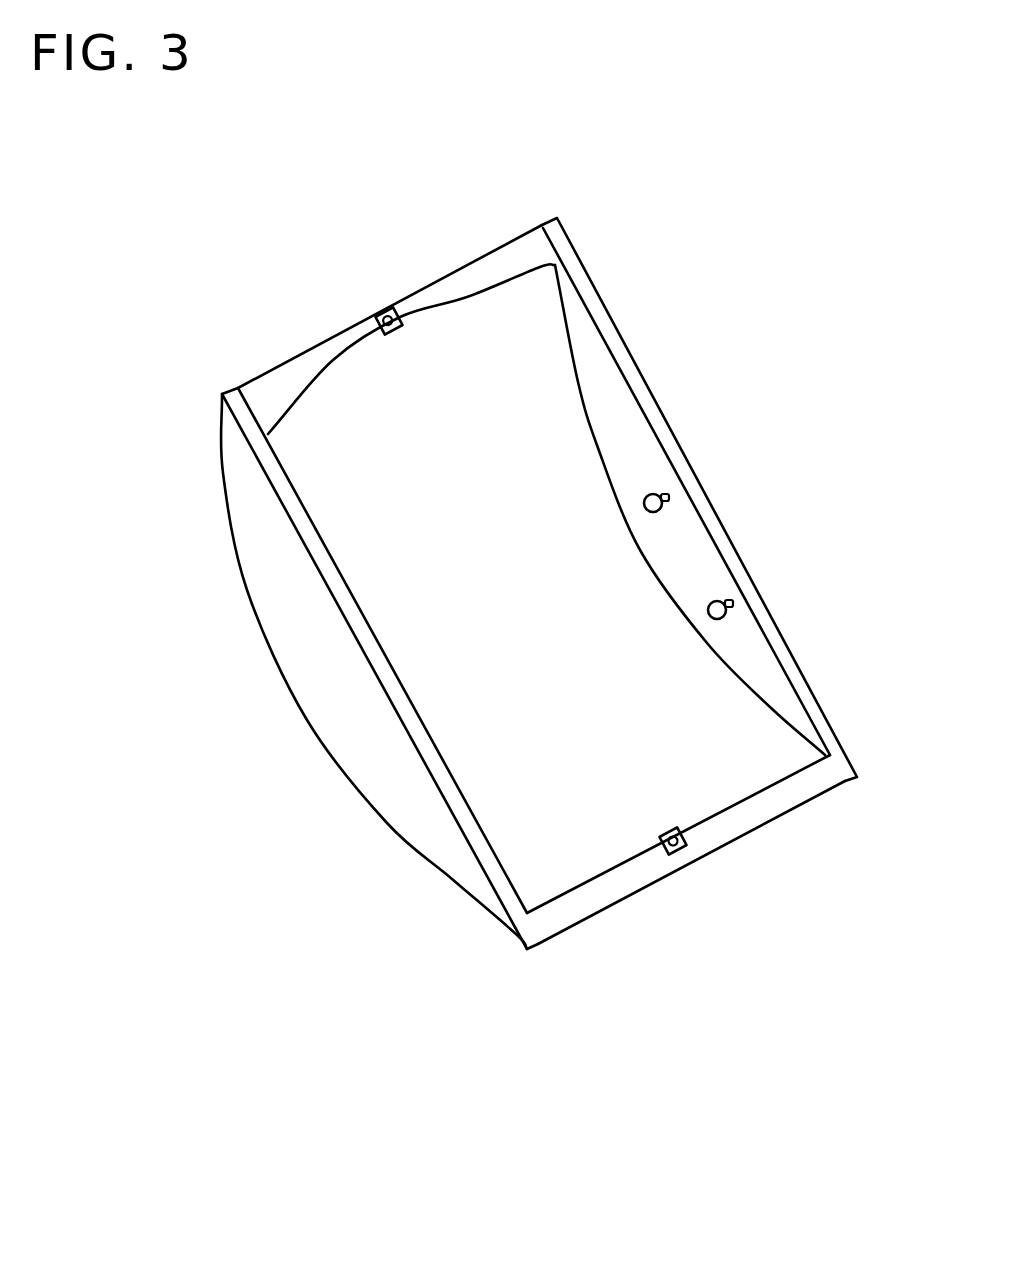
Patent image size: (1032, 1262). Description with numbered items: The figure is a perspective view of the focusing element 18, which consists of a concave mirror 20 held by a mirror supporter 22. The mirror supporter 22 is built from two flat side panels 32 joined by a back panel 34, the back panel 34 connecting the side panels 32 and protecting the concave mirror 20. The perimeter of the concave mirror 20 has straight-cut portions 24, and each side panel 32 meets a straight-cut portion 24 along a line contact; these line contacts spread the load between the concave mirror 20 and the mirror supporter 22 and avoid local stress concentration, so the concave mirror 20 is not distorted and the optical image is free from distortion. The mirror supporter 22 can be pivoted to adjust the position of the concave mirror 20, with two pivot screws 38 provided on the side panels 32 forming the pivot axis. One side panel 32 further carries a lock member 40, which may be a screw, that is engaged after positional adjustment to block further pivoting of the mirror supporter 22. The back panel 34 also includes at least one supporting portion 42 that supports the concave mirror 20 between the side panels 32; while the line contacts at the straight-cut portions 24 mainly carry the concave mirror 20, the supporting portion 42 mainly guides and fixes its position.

The focusing element 18 is at (618, 232).
The concave mirror 20 is at (585, 867).
The mirror supporter 22 is at (702, 483).
The straight-cut portion 24 is at (578, 382).
The side panel 32 is at (490, 880).
The back panel 34 is at (627, 897).
The pivot screw 38 is at (657, 493).
The lock member 40 is at (718, 597).
The supporting portion 42 is at (400, 308).